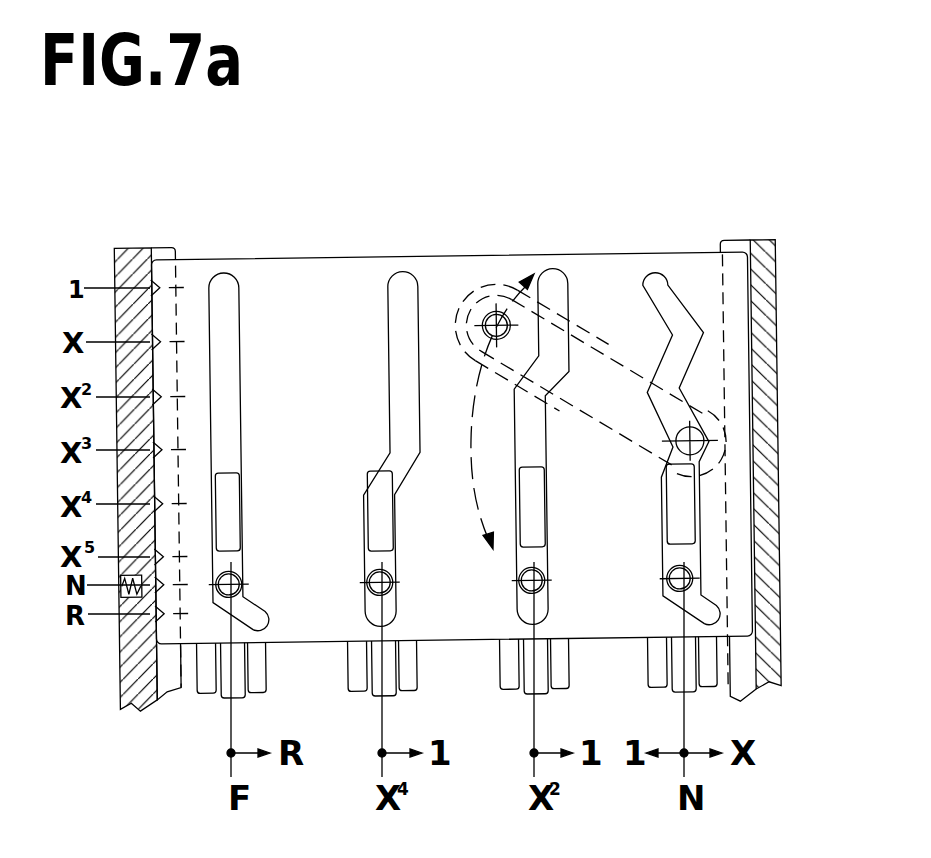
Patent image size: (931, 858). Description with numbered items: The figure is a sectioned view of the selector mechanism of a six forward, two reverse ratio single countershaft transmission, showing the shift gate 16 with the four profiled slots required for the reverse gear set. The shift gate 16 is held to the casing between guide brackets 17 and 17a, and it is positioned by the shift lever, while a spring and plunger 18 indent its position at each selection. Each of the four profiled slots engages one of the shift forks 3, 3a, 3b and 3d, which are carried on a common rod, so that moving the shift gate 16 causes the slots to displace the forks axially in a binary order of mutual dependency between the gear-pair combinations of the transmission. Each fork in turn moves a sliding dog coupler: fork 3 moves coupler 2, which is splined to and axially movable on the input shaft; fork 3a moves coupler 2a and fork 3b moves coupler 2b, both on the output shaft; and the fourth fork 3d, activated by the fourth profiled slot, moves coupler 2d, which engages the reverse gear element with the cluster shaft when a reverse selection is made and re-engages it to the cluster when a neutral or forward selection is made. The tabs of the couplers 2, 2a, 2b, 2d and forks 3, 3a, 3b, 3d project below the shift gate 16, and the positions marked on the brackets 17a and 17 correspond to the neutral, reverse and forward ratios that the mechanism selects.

The guide bracket 17a is at (127, 259).
The guide bracket 17 is at (755, 253).
The shift gate 16 is at (467, 278).
The spring and plunger 18 is at (126, 612).
The sliding dog coupler 2 is at (660, 653).
The sliding dog coupler 2a is at (510, 653).
The sliding dog coupler 2b is at (353, 660).
The sliding dog coupler 2d is at (205, 663).
The shift fork 3 is at (683, 677).
The shift fork 3a is at (530, 680).
The shift fork 3b is at (382, 672).
The shift fork 3d is at (230, 682).